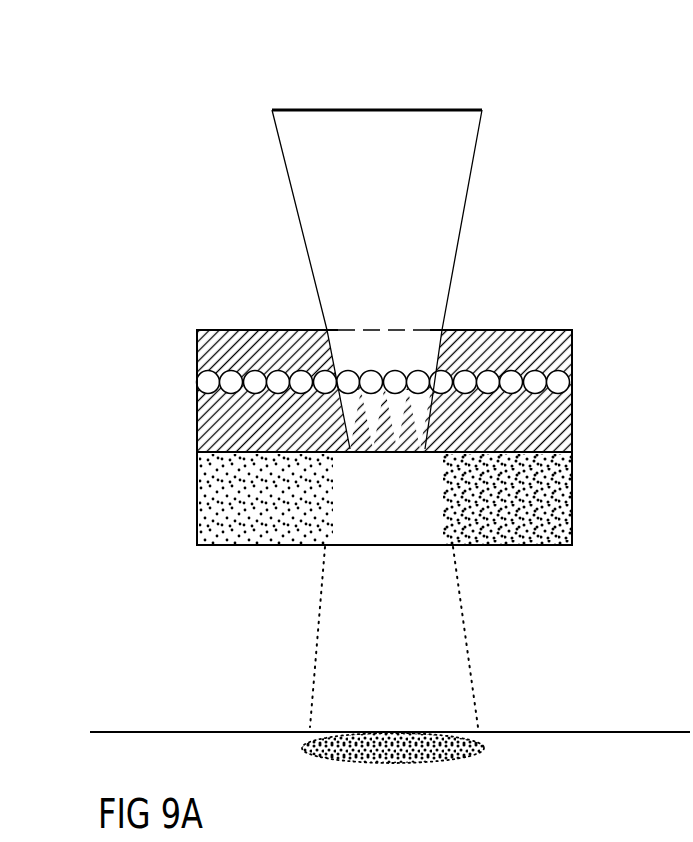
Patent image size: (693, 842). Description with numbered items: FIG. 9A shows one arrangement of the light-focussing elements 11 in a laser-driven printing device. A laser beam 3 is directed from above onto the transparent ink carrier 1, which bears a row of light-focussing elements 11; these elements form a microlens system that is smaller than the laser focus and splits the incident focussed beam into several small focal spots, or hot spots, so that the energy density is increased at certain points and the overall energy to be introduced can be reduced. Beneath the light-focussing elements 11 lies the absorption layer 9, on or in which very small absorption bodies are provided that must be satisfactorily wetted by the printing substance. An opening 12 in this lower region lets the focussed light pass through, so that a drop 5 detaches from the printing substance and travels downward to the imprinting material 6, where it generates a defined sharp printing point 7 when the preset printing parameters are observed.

The ink carrier 1 is at (267, 330).
The laser beam 3 is at (408, 184).
The drop 5 is at (438, 618).
The imprinting material 6 is at (543, 742).
The printing point 7 is at (383, 760).
The absorption layer 9 is at (572, 533).
The light-focussing elements 11 is at (245, 536).
The aperture opening 12 is at (348, 530).